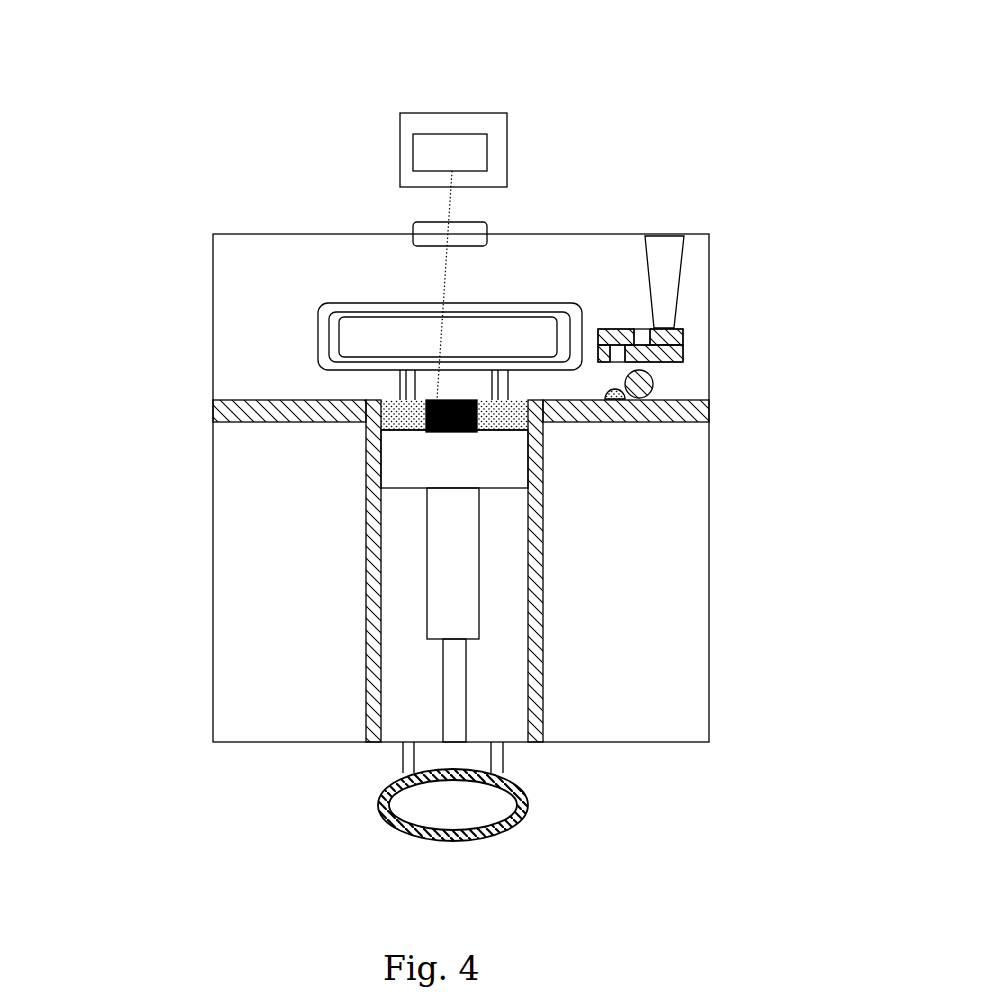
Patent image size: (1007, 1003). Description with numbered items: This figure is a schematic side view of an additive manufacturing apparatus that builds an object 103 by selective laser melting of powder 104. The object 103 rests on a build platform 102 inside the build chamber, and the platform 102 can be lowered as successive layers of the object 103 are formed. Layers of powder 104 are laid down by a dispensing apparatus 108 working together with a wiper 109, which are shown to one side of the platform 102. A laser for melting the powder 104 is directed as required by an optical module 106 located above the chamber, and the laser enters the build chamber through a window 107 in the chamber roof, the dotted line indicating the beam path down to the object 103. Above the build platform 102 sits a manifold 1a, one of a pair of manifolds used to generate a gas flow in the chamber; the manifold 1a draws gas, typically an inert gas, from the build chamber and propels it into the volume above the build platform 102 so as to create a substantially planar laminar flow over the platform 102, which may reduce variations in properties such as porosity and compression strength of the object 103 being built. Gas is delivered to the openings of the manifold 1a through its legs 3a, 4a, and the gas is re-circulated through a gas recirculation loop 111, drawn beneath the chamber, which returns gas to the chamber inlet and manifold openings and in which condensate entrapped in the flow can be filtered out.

The optical module 106 is at (396, 160).
The window 107 is at (423, 219).
The manifold 1a is at (313, 332).
The dispensing apparatus 108 is at (691, 341).
The wiper 109 is at (663, 381).
The build platform 102 is at (505, 457).
The powder 104 is at (396, 420).
The object 103 is at (423, 433).
The leg 3a is at (398, 763).
The leg 4a is at (507, 763).
The gas recirculation loop 111 is at (535, 815).